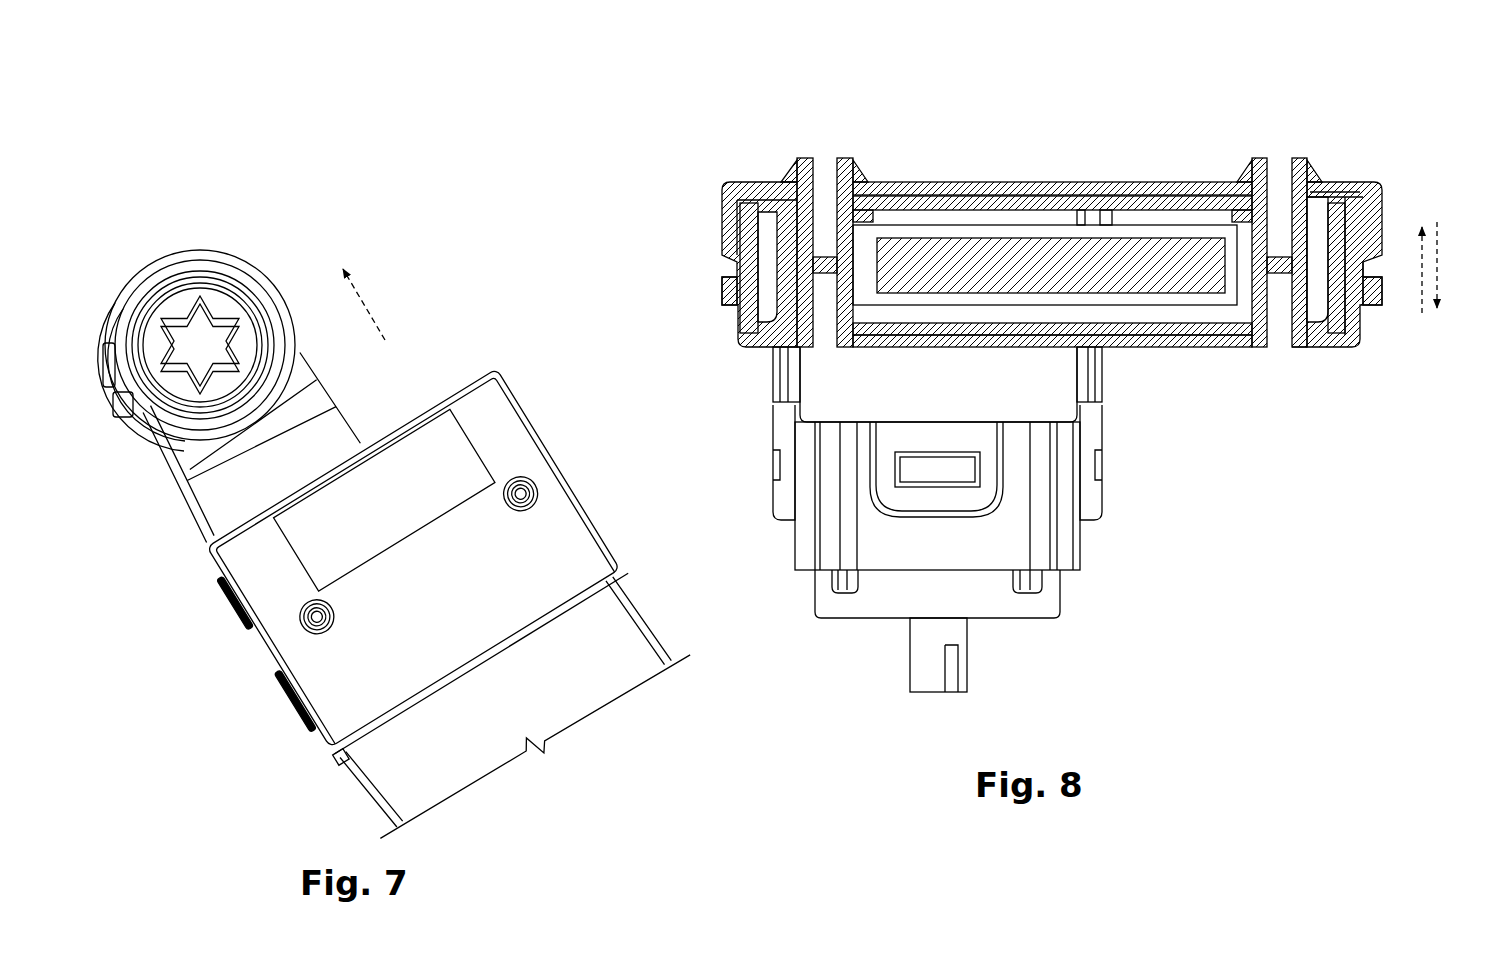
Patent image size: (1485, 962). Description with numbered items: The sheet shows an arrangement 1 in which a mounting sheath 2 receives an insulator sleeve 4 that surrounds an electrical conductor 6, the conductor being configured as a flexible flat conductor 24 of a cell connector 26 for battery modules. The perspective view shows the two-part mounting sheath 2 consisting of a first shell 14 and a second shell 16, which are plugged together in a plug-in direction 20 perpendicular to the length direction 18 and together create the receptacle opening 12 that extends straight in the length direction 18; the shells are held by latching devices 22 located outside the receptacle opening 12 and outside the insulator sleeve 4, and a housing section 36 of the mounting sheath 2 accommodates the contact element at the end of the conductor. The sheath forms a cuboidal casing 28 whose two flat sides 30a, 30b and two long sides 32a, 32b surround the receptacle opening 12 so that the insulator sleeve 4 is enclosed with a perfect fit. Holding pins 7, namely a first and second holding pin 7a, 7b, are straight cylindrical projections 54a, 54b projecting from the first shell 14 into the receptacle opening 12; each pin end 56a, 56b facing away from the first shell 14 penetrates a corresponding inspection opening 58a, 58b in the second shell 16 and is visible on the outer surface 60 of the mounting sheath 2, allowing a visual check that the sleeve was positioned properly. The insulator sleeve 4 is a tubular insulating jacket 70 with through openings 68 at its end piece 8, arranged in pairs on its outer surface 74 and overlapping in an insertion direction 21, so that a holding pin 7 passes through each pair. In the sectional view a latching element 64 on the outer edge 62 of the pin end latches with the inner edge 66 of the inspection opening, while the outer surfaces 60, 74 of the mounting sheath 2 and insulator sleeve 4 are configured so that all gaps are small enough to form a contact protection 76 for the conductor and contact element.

In FIG. 7, the arrangement 1 is at (258, 218).
In FIG. 8, the arrangement 1 is at (1387, 42).
In FIG. 7, the mounting sheath 2 is at (419, 523).
In FIG. 8, the mounting sheath 2 is at (1030, 246).
In FIG. 7, the insulator sleeve 4 is at (540, 707).
In FIG. 8, the insulator sleeve 4 is at (1052, 142).
In FIG. 8, the electrical conductor 6 is at (1052, 221).
In FIG. 7, the holding pin 7 is at (394, 552).
In FIG. 8, the holding pin 7 is at (1023, 205).
In FIG. 7, the holding pin 7a is at (241, 666).
In FIG. 8, the holding pin 7a is at (751, 210).
In FIG. 7, the holding pin 7b is at (570, 441).
In FIG. 8, the holding pin 7b is at (1306, 205).
In FIG. 7, the end piece 8 is at (304, 747).
In FIG. 7, the receptacle opening 12 is at (540, 707).
In FIG. 7, the first shell 14 is at (337, 766).
In FIG. 8, the first shell 14 is at (1319, 274).
In FIG. 7, the second shell 16 is at (419, 496).
In FIG. 8, the second shell 16 is at (712, 248).
In FIG. 7, the length direction 18 is at (372, 315).
In FIG. 8, the plug-in direction 20 is at (1440, 262).
In FIG. 8, the insertion direction 21 is at (1420, 273).
In FIG. 7, the latching device 22 is at (237, 598).
In FIG. 8, the latching device 22 is at (728, 268).
In FIG. 8, the flexible flat conductor 24 is at (1052, 221).
In FIG. 8, the cell connector 26 is at (1117, 222).
In FIG. 8, the cuboidal casing 28 is at (1030, 274).
In FIG. 8, the flat side 30a is at (1052, 142).
In FIG. 8, the flat side 30b is at (1160, 348).
In FIG. 8, the long side 32a is at (748, 240).
In FIG. 8, the long side 32b is at (1358, 218).
In FIG. 7, the housing section 36 is at (152, 433).
In FIG. 8, the housing section 36 is at (990, 587).
In FIG. 8, the cylindrical projection 54a is at (751, 210).
In FIG. 8, the cylindrical projection 54b is at (1306, 205).
In FIG. 7, the pin end 56a is at (316, 638).
In FIG. 8, the pin end 56a is at (858, 155).
In FIG. 7, the pin end 56b is at (542, 485).
In FIG. 8, the pin end 56b is at (1231, 163).
In FIG. 7, the inspection opening 58a is at (244, 666).
In FIG. 8, the inspection opening 58a is at (807, 223).
In FIG. 7, the inspection opening 58b is at (570, 441).
In FIG. 8, the inspection opening 58b is at (1277, 152).
In FIG. 7, the outer surface 60 is at (497, 402).
In FIG. 8, the outer surface 60 is at (1052, 142).
In FIG. 8, the outer edge 62 is at (852, 207).
In FIG. 8, the latching element 64 is at (1023, 205).
In FIG. 8, the inner edge 66 is at (1310, 192).
In FIG. 8, the through opening 68 is at (1306, 352).
In FIG. 7, the tubular insulating jacket 70 is at (540, 707).
In FIG. 8, the tubular insulating jacket 70 is at (1052, 142).
In FIG. 7, the outer surface 74 is at (590, 690).
In FIG. 8, the outer surface 74 is at (948, 188).
In FIG. 7, the contact protection 76 is at (276, 221).